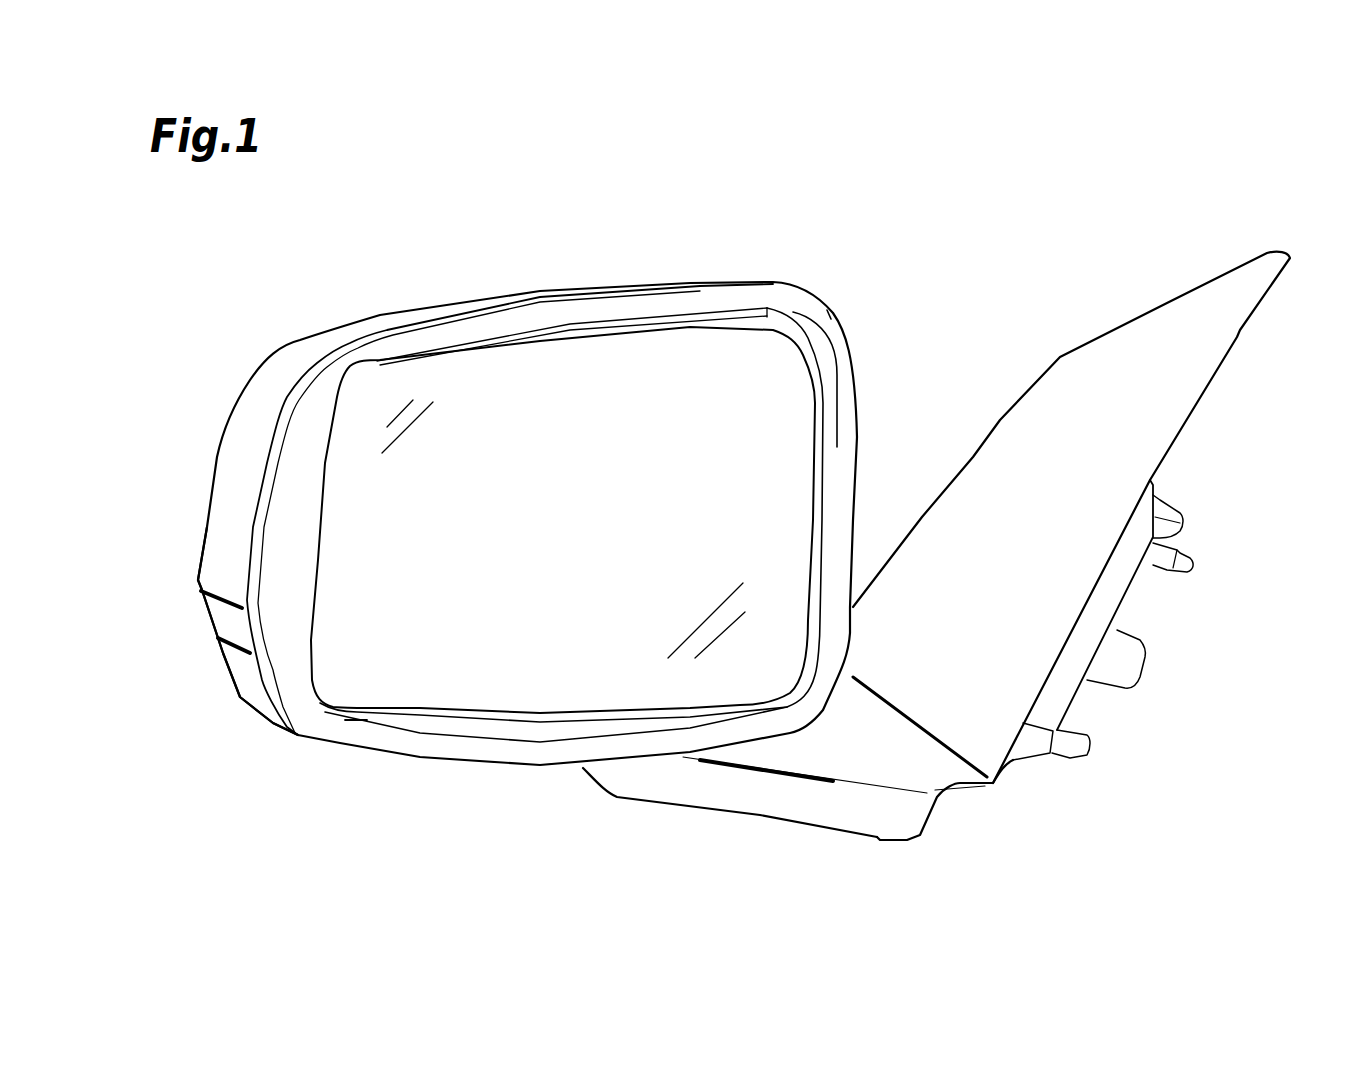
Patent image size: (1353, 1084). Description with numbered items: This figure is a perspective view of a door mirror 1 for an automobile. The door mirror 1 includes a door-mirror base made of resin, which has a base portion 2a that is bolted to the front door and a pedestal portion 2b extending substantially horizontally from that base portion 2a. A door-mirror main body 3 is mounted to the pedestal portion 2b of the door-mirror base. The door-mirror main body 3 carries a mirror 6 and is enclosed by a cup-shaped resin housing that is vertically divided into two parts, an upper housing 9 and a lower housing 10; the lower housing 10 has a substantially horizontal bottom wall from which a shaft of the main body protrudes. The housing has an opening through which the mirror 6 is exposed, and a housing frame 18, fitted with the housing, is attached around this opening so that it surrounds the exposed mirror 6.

The door mirror 1 is at (886, 309).
The base portion 2a is at (1160, 423).
The pedestal portion 2b is at (842, 763).
The door-mirror main body 3 is at (361, 288).
The mirror 6 is at (697, 353).
The upper housing 9 is at (227, 470).
The lower housing 10 is at (247, 683).
The housing frame 18 is at (843, 470).